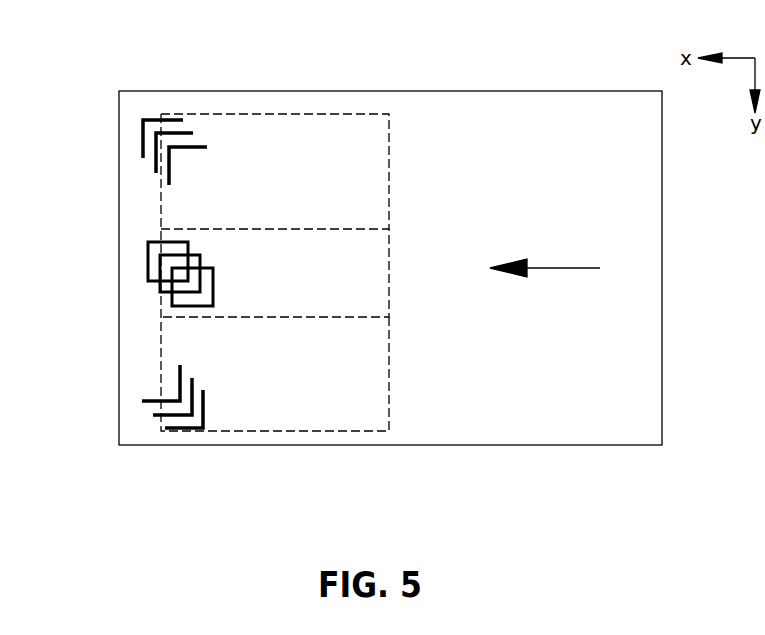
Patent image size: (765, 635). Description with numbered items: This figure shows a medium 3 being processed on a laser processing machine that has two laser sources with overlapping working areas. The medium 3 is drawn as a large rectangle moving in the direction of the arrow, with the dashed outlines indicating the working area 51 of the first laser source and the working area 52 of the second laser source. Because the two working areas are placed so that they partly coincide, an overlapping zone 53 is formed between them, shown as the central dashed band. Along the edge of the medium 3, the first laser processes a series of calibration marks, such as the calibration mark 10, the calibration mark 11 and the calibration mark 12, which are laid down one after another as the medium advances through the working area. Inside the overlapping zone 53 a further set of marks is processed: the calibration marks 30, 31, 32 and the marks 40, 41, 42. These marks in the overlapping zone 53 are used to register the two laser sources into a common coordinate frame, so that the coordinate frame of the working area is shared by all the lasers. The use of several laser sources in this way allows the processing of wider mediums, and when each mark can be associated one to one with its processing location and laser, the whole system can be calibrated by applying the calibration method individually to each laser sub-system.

The medium 3 is at (424, 91).
The calibration mark 10 is at (150, 120).
The calibration mark 11 is at (192, 133).
The calibration mark 12 is at (200, 147).
The calibration mark 30 is at (150, 242).
The calibration mark 31 is at (148, 256).
The calibration mark 32 is at (160, 269).
The mark 40 is at (173, 298).
The mark 41 is at (197, 292).
The mark 42 is at (212, 306).
The working area 51 is at (317, 114).
The working area 52 is at (310, 432).
The overlapping zone 53 is at (389, 252).